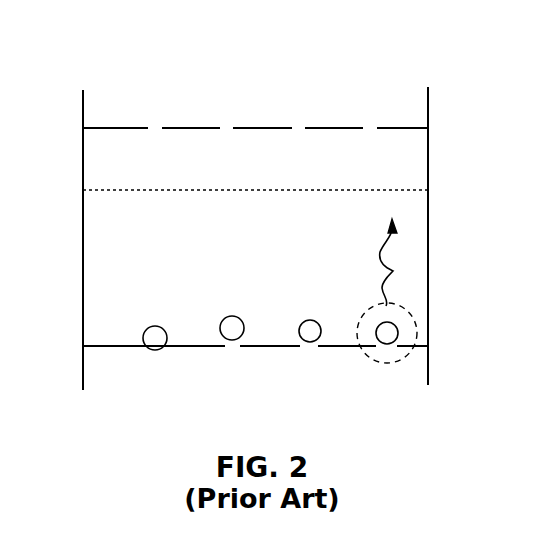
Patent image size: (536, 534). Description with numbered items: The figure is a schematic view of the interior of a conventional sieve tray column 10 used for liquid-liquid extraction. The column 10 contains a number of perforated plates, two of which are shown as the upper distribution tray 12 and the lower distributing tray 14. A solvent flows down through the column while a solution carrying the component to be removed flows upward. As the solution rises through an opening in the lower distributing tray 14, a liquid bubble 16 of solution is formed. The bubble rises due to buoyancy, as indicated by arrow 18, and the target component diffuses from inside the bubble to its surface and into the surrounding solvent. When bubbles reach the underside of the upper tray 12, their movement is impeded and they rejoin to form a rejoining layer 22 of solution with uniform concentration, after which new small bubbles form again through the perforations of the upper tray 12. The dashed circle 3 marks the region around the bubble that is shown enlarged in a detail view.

The prior art system 10 is at (100, 57).
The top boundary / surface 12 is at (396, 127).
The dotted level line 22 is at (421, 165).
The rising path / arrow 18 is at (395, 272).
The particles / bubbles 16 is at (399, 331).
The bottom surface 14 is at (426, 345).
The detail region circle 3 is at (396, 363).